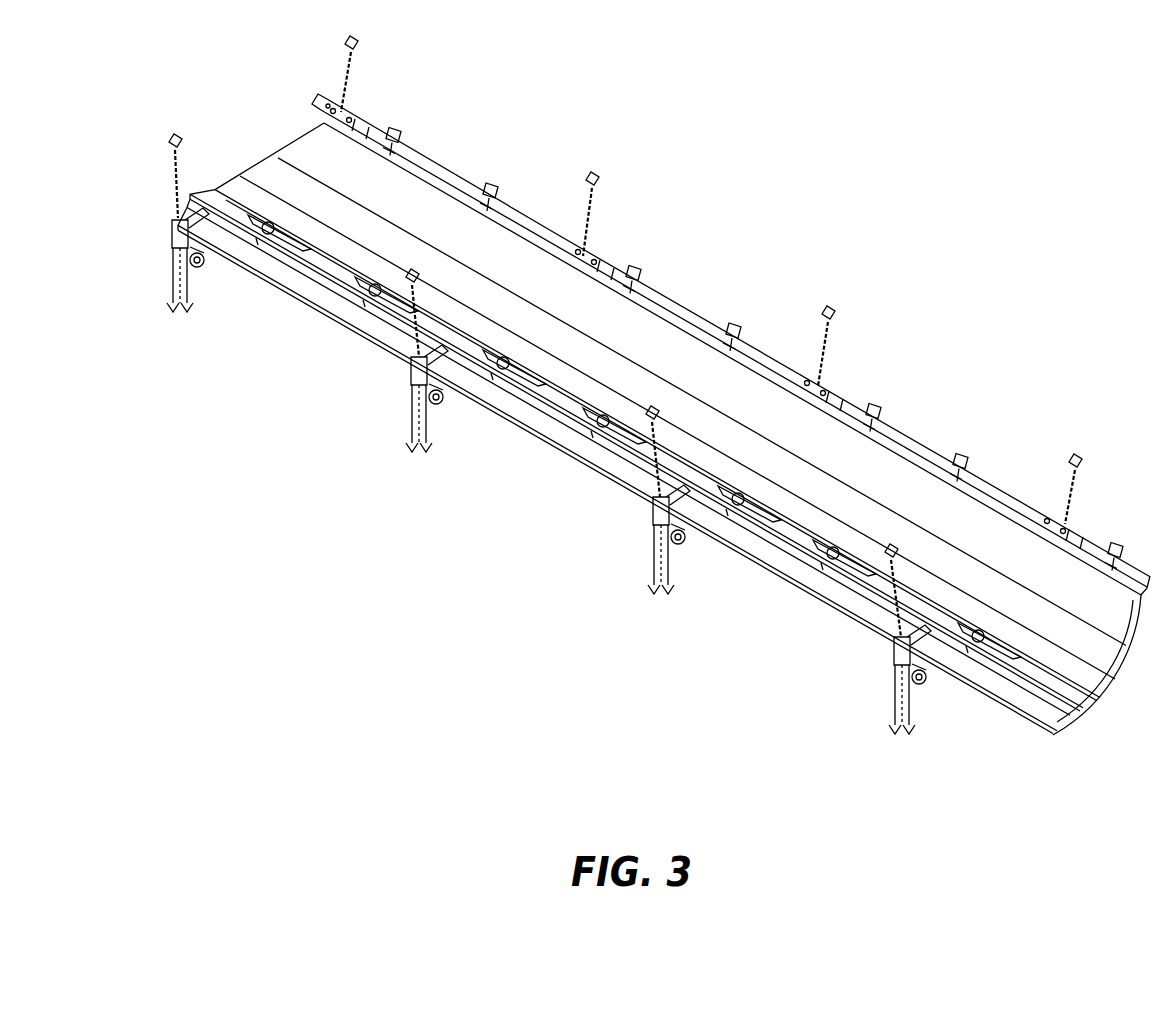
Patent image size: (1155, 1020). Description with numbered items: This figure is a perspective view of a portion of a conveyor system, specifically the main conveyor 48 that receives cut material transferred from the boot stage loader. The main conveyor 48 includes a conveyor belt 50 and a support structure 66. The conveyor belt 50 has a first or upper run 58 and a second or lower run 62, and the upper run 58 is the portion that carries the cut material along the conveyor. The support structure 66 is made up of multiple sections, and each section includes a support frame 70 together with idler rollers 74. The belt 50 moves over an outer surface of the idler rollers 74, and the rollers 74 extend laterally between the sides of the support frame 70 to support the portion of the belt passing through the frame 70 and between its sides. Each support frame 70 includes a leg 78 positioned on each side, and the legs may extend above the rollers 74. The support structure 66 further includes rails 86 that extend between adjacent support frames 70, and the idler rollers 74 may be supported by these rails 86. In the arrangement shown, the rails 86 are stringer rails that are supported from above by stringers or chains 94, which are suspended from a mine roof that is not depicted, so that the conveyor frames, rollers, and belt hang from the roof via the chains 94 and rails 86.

The main conveyor 48 is at (650, 413).
The conveyor belt 50 is at (519, 262).
The upper run 58 is at (752, 376).
The lower run 62 is at (562, 437).
The support structure 66 is at (646, 597).
The support frame 70 is at (379, 418).
The idler rollers 74 is at (208, 258).
The leg 78 is at (173, 312).
The rails 86 is at (995, 495).
The chains 94 is at (593, 200).